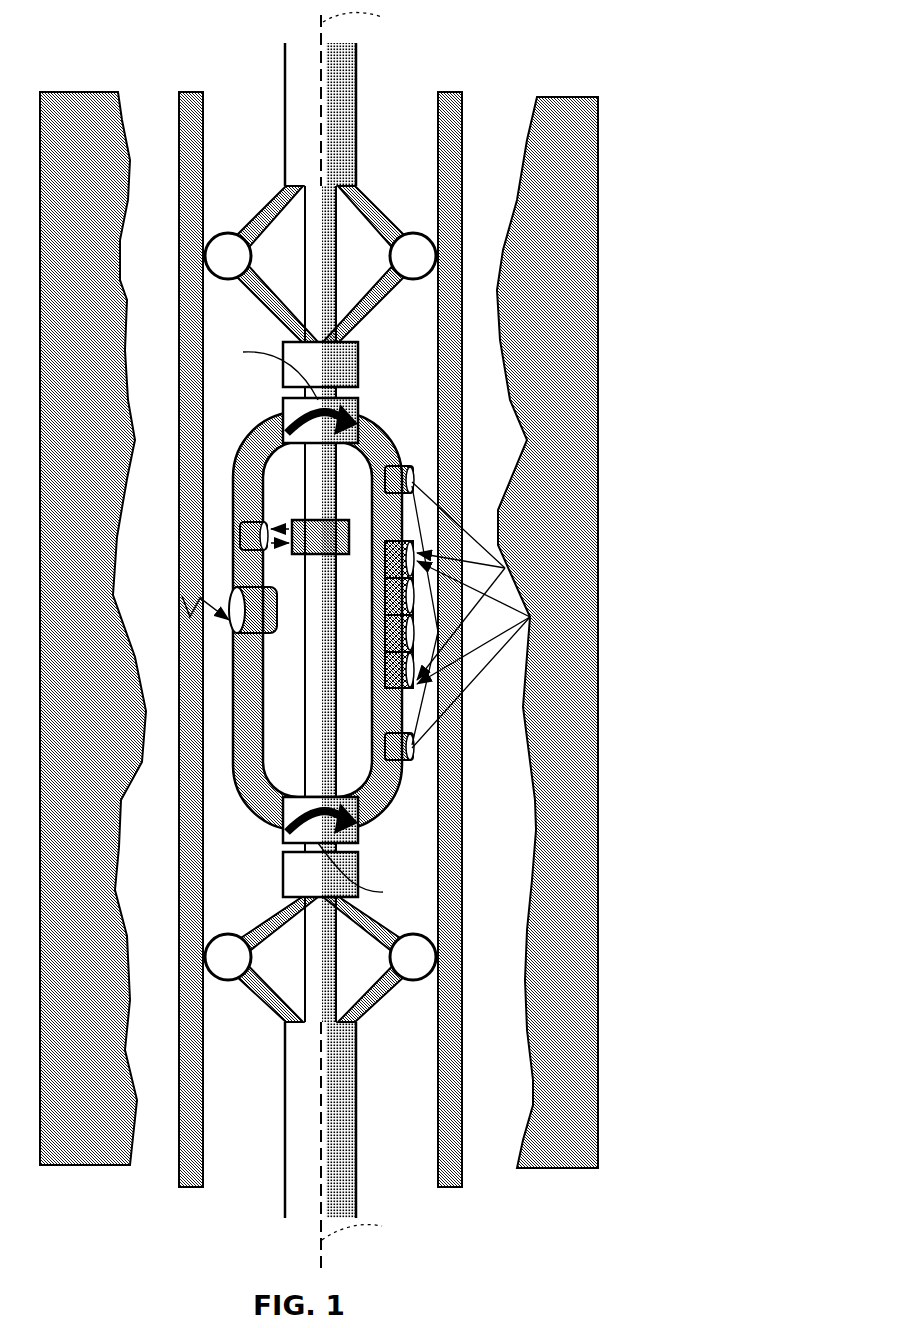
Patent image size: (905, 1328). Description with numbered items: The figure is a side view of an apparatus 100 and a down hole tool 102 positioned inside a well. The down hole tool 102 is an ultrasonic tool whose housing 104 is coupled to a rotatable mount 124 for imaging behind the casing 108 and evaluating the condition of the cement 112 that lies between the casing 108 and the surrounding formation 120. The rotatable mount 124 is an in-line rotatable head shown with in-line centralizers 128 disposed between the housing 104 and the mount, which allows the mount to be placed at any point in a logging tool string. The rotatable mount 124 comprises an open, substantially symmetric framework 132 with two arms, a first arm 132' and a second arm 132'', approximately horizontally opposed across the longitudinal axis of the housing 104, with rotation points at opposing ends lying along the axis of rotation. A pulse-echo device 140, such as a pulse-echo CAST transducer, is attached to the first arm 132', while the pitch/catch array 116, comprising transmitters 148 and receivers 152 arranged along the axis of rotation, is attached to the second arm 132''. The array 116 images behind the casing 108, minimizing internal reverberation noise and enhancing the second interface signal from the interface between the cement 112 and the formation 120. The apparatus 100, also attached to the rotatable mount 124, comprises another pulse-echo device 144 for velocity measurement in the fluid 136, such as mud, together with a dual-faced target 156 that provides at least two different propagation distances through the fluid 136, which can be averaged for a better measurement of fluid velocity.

The apparatus 100 is at (399, 615).
The down hole tool 102 is at (442, 69).
The housing 104 is at (356, 75).
The casing 108 is at (193, 878).
The cement 112 is at (165, 860).
The pitch/catch array 116 is at (605, 460).
The formation 120 is at (100, 781).
The rotatable mount 124 is at (368, 374).
The in-line centralizers 128 is at (359, 210).
The framework 132 is at (319, 626).
The first arm 132' is at (231, 825).
The second arm 132'' is at (404, 835).
The fluid 136 is at (263, 1125).
The pulse-echo device 140 is at (277, 628).
The pulse-echo device 144 is at (246, 551).
The transmitters 148 is at (403, 466).
The receivers 152 is at (378, 540).
The dual-faced target 156 is at (300, 520).